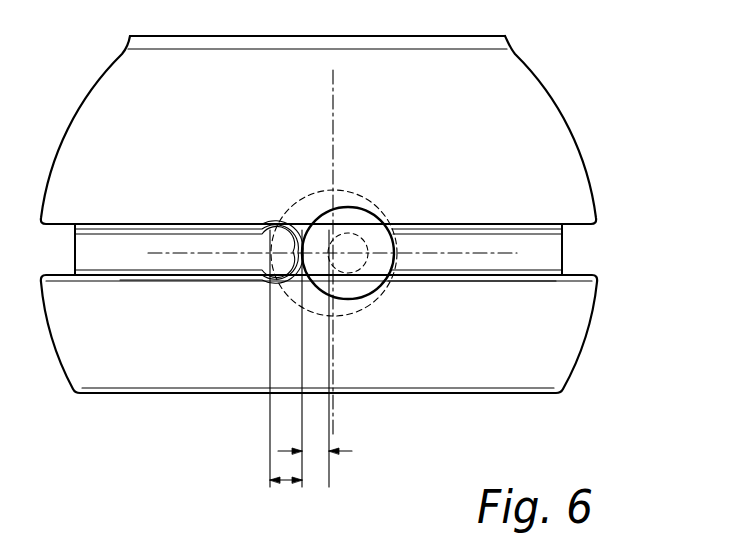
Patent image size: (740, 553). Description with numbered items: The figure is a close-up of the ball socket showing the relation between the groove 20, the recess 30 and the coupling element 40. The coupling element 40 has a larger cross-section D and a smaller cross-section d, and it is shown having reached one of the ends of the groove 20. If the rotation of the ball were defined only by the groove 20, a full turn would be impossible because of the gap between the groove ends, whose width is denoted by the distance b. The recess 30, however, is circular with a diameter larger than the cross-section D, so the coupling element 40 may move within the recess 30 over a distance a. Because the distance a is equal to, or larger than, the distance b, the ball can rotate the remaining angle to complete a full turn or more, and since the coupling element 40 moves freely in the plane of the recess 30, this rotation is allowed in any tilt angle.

The groove 20 is at (597, 260).
The recess 30 is at (317, 193).
The coupling element 40 is at (306, 268).
The larger cross-section D is at (366, 222).
The smaller cross-section d is at (352, 263).
The distance a is at (286, 367).
The distance b is at (317, 358).